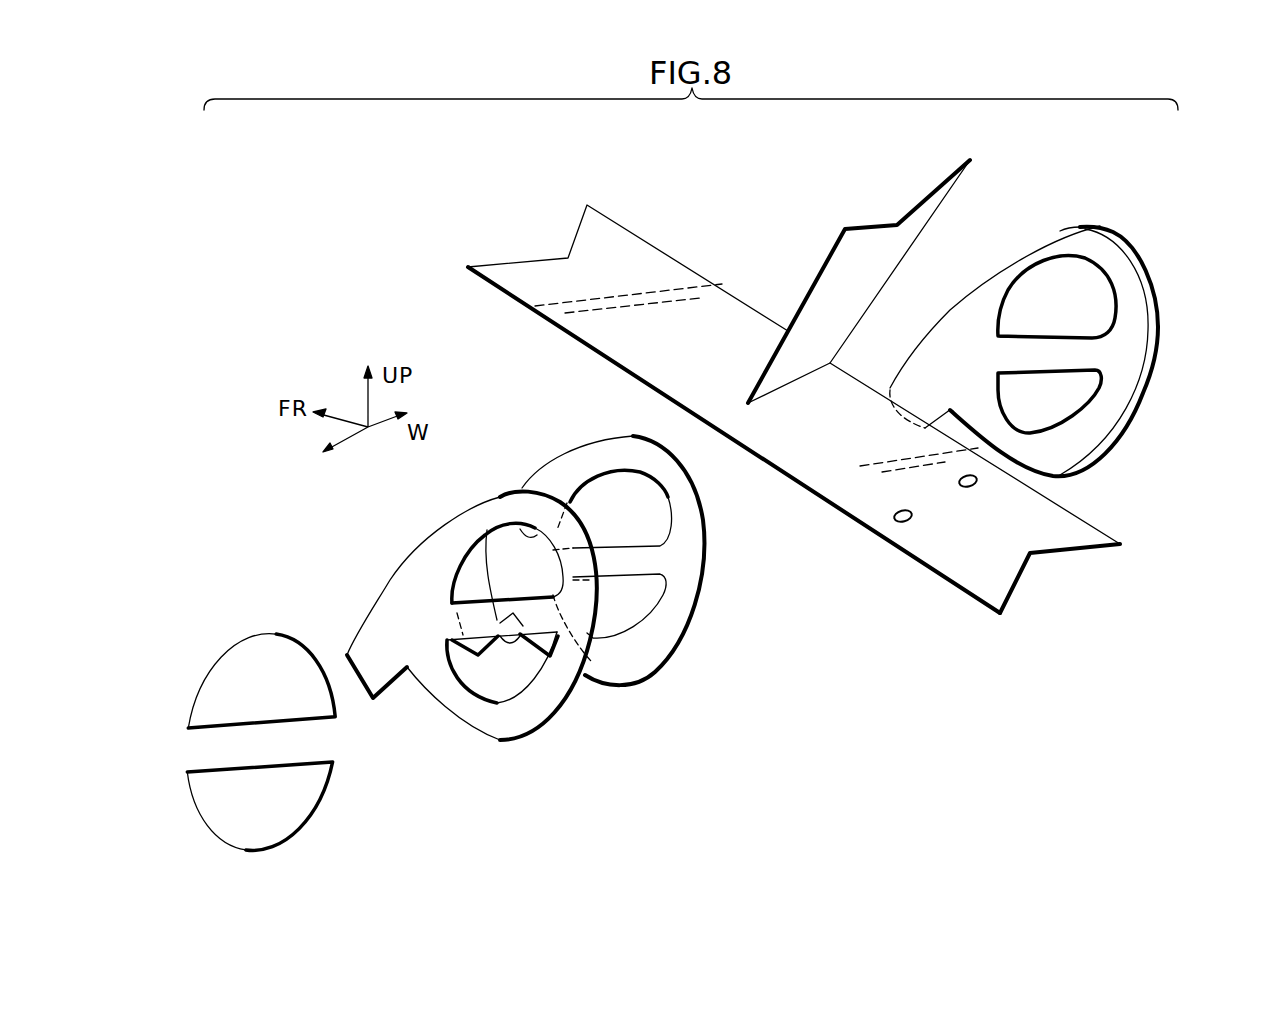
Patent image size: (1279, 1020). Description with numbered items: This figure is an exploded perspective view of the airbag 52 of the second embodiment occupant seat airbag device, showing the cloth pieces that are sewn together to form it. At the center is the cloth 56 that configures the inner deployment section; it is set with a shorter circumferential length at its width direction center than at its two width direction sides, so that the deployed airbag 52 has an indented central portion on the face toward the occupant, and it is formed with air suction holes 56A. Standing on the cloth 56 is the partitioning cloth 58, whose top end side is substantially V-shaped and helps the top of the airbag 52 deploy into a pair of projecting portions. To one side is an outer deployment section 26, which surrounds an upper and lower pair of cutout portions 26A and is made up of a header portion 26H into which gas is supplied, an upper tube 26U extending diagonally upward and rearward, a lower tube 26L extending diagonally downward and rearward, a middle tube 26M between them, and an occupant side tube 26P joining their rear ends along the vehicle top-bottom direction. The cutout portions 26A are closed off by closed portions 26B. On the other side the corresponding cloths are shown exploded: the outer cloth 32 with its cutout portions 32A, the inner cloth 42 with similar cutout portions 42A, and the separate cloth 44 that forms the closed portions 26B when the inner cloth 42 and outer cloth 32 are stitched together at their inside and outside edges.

The airbag 52 is at (793, 179).
The cloth 56 is at (750, 327).
The air suction holes 56A is at (963, 492).
The partitioning cloth 58 is at (860, 252).
The outer deployment section 26 is at (1066, 331).
The cutout portion 26A is at (1035, 370).
The upper tube 26U is at (1082, 240).
The header portion 26H is at (915, 385).
The middle tube 26M is at (1063, 345).
The closed portion 26B is at (1087, 388).
The occupant side tube 26P is at (1103, 421).
The lower tube 26L is at (1077, 452).
The outer cloth 32 is at (472, 592).
The cutout portion 32A is at (536, 536).
The inner cloth 42 is at (667, 574).
The cutout portion 42A is at (655, 588).
The cloth 44 is at (297, 791).